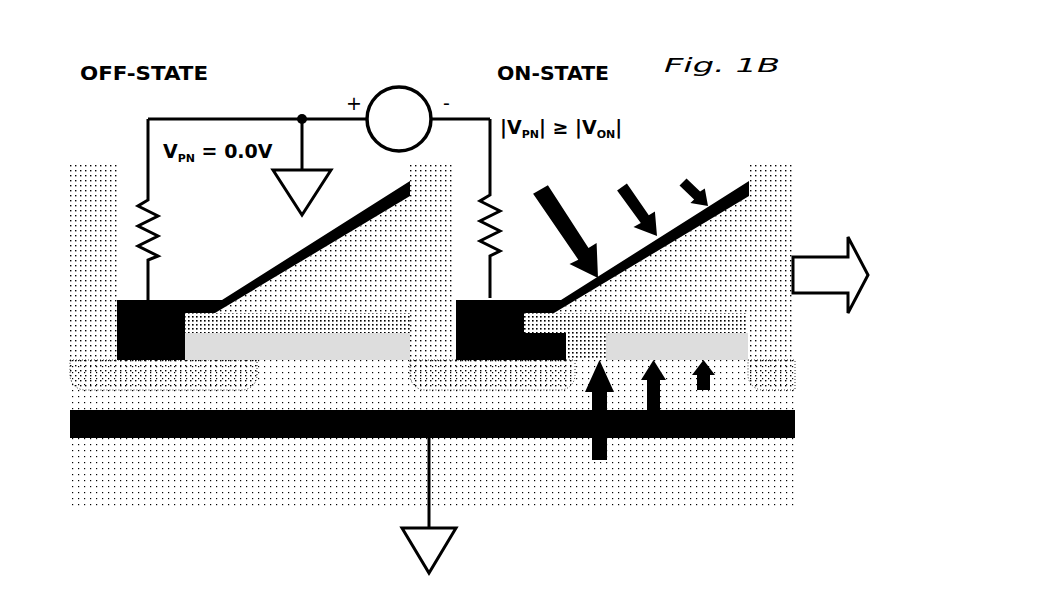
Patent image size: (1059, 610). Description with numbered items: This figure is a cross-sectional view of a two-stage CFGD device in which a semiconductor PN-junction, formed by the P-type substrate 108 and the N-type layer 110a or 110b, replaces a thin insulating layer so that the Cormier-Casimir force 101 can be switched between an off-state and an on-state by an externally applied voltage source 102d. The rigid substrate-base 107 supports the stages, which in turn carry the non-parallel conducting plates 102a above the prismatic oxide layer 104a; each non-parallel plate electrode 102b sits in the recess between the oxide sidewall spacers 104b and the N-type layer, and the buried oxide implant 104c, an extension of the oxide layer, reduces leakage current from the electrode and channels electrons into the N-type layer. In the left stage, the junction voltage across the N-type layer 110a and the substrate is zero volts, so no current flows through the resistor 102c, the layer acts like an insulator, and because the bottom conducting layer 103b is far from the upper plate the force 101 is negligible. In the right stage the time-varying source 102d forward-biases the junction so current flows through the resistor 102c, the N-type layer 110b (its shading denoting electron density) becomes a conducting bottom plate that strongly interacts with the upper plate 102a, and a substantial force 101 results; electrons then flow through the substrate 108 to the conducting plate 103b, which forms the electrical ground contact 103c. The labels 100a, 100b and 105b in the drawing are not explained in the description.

The incident light (on-state illumination) 100a is at (616, 154).
The radiation from substrate side 100b is at (659, 464).
The Cormier-Casimir force component 101 is at (841, 285).
The non-parallel conducting plate 102a is at (292, 248).
The non-parallel plate electrode 102b is at (160, 300).
The resistor 102c is at (150, 198).
The external voltage source 102d is at (399, 87).
The bottom conducting layer 103b is at (797, 420).
The electrical ground contact 103c is at (326, 197).
The prismatic oxide layer 104a is at (357, 288).
The oxide sidewall spacer 104b is at (117, 248).
The buried oxide implant 104c is at (234, 384).
The junction region 105b is at (327, 333).
The rigid substrate-base 107 is at (251, 485).
The P-type substrate 108 is at (348, 393).
The N-type layer (off-state) 110a is at (389, 358).
The N-type layer (on-state) 110b is at (729, 358).